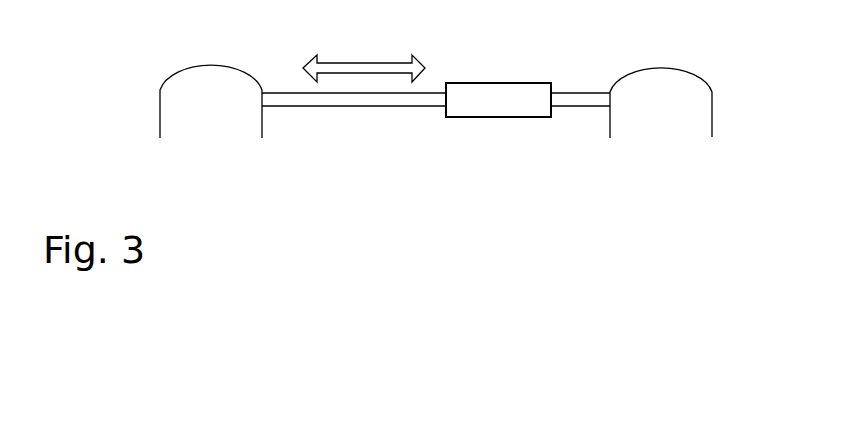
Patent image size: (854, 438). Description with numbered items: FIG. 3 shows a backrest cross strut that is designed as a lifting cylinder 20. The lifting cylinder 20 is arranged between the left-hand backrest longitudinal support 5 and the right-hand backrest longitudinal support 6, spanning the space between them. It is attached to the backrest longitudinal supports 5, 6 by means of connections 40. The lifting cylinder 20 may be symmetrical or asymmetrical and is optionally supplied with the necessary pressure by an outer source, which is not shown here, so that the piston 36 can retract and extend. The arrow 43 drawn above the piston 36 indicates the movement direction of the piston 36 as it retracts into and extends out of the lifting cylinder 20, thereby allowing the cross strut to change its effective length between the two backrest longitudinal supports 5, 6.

The left-hand backrest longitudinal support 5 is at (165, 102).
The right-hand backrest longitudinal support 6 is at (707, 118).
The lifting cylinder 20 is at (502, 117).
The piston 36 is at (354, 105).
The connections 40 is at (584, 100).
The arrow 43 is at (357, 69).